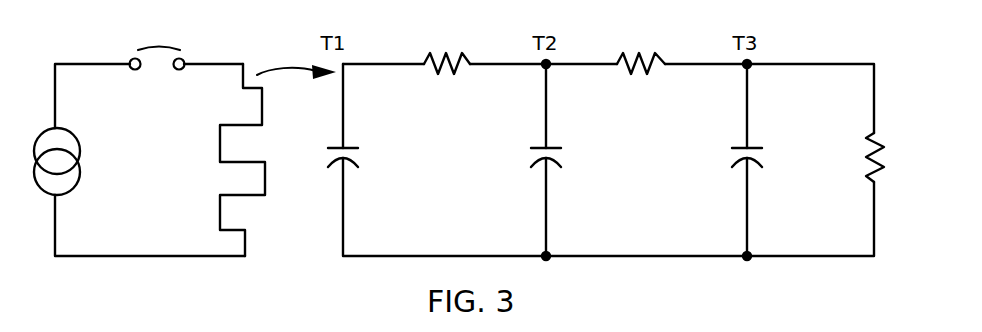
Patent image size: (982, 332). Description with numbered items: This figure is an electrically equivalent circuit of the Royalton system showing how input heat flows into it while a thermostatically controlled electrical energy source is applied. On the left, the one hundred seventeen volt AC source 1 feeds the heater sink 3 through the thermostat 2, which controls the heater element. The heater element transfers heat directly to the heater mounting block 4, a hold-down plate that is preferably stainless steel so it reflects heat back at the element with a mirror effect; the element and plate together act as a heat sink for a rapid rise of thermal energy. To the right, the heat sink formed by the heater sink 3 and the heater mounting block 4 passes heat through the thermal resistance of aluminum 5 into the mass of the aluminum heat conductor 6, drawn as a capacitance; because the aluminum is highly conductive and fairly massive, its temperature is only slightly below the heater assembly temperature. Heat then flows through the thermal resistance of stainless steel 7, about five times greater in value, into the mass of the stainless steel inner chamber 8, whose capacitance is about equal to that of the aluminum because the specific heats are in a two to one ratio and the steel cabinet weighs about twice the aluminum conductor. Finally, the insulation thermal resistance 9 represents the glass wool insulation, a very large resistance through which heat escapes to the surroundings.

The 117 Volt AC source 1 is at (56, 148).
The thermostat 2 is at (157, 44).
The heater sink 3 is at (230, 160).
The heater mounting block 4 is at (351, 157).
The thermal resistance of aluminum 5 is at (447, 49).
The mass of the aluminum heat conductor 6 is at (554, 155).
The thermal resistance of stainless steel 7 is at (641, 48).
The mass of the stainless steel inner chamber 8 is at (757, 156).
The insulation thermal resistance 9 is at (883, 156).